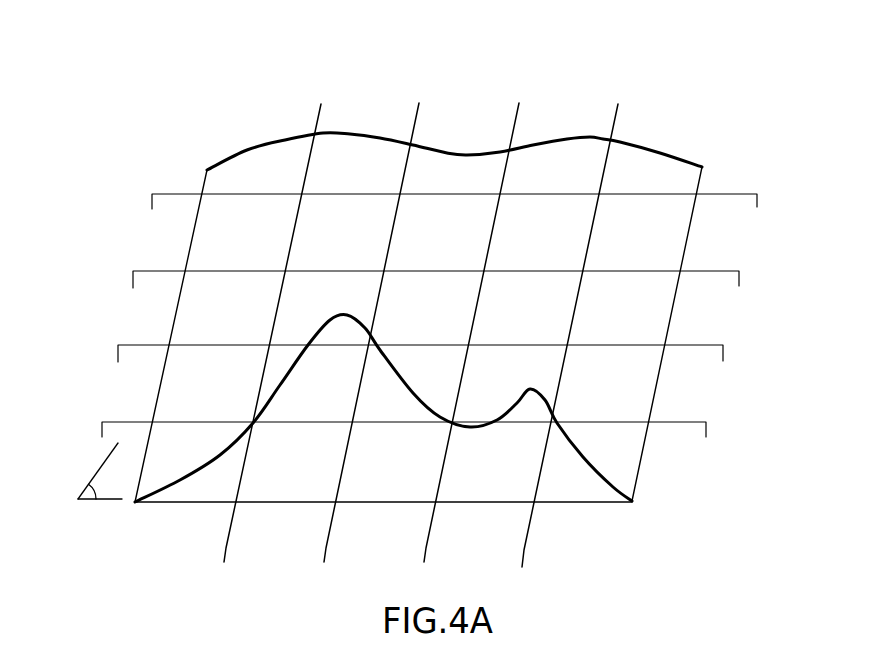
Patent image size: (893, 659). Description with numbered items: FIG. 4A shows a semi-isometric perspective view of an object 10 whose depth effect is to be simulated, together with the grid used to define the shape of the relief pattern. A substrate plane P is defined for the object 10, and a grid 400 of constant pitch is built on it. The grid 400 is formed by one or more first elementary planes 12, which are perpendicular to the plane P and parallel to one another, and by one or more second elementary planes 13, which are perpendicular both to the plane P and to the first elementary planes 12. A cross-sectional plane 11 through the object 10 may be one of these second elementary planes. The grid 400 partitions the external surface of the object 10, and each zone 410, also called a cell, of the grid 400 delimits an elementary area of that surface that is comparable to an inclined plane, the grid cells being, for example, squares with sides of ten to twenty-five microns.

The object 10 is at (121, 125).
The cross-sectional plane 11 is at (403, 367).
The first elementary planes 12 is at (530, 512).
The second elementary planes 13 is at (150, 271).
The grid 400 is at (432, 101).
The zone 410 is at (532, 222).
The substrate plane P is at (100, 471).